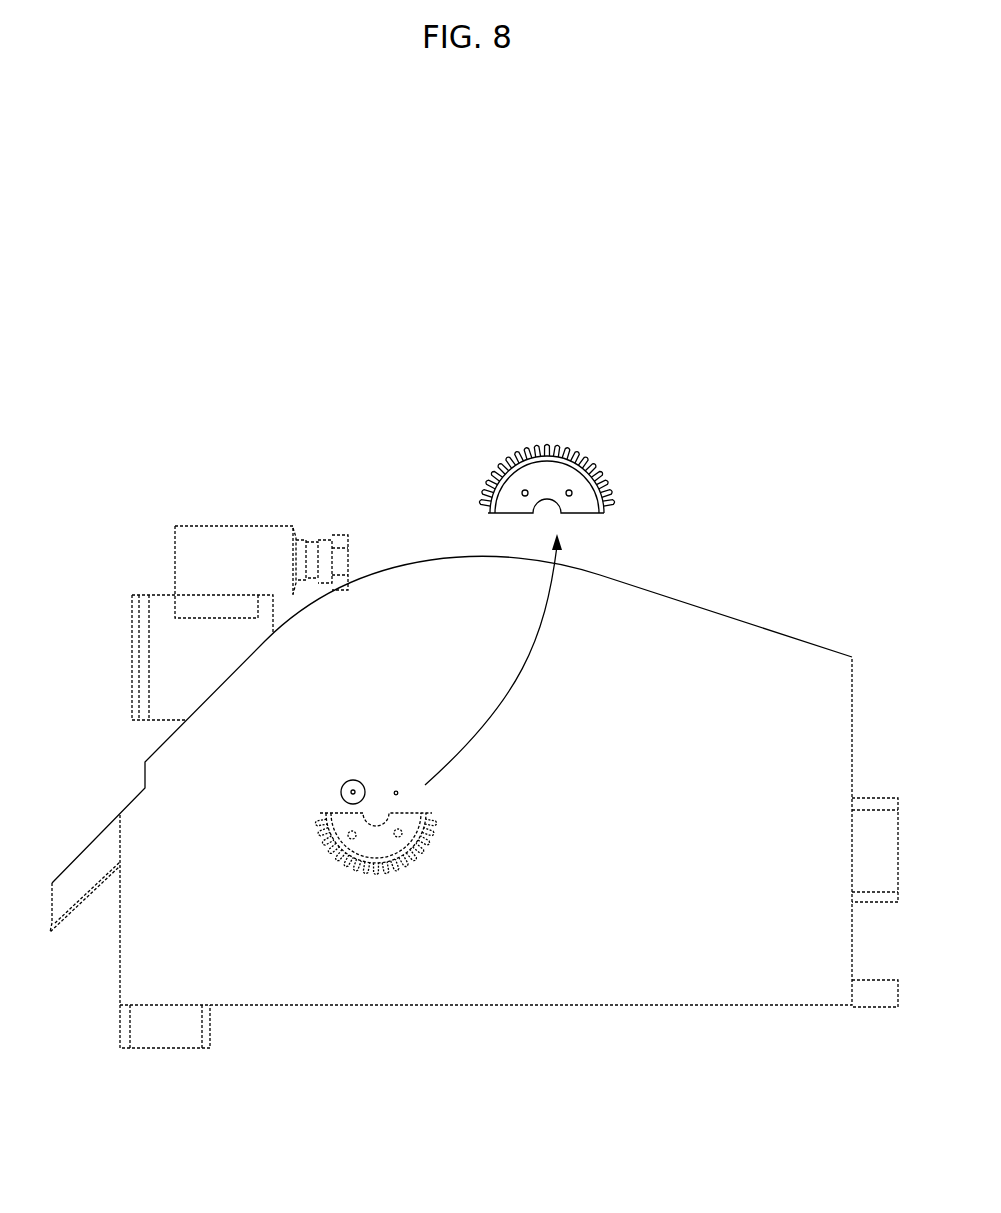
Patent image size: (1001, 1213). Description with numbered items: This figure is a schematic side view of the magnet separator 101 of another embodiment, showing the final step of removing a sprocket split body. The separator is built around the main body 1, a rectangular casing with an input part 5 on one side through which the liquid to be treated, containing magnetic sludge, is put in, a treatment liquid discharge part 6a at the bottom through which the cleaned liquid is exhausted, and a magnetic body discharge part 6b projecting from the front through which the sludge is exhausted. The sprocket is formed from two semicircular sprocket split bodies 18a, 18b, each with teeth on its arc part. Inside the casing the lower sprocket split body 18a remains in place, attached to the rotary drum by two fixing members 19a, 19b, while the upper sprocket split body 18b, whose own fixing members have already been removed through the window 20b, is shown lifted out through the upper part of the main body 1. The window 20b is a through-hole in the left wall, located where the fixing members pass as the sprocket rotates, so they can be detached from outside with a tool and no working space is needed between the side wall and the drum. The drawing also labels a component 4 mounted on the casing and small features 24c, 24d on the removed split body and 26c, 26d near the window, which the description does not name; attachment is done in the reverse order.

The magnet separator 101 is at (696, 294).
The main body 1 is at (737, 634).
The motor 4 is at (241, 550).
The input part 5 is at (877, 822).
The treatment liquid discharge part 6a is at (173, 1037).
The magnetic body discharge part 6b is at (75, 875).
The sprocket split body 18a is at (382, 852).
The sprocket split body 18b is at (503, 432).
The fixing member 19a is at (402, 835).
The fixing member 19b is at (352, 838).
The window 20b is at (355, 778).
The hole 24c is at (515, 495).
The hole 24d is at (577, 490).
The shaft 26c is at (340, 790).
The pin 26d is at (396, 789).